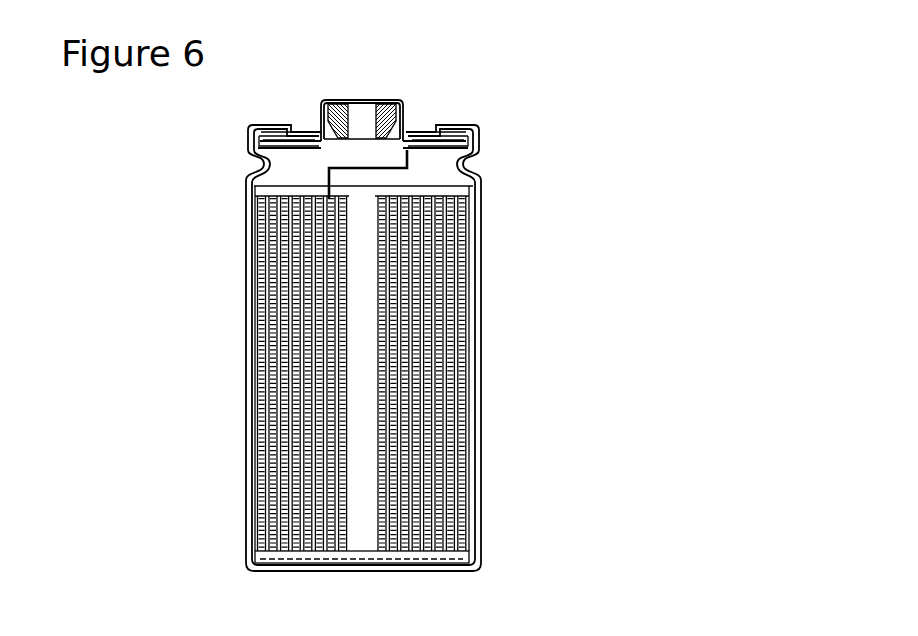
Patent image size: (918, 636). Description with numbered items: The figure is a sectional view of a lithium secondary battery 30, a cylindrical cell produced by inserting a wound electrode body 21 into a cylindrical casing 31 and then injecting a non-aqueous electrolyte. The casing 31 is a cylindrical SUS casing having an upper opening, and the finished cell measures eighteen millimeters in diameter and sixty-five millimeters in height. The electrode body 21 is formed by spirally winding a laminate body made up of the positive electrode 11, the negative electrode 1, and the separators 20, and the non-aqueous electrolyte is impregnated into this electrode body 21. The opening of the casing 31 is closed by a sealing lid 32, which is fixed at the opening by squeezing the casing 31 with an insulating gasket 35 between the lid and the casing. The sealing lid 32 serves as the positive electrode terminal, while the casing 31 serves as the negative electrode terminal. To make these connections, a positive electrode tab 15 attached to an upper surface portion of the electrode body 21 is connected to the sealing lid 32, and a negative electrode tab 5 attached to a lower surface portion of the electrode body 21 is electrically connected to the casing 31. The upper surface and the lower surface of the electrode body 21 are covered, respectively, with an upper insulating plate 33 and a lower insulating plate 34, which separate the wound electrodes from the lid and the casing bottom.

The lithium secondary battery 30 is at (608, 51).
The casing 31 is at (473, 218).
The sealing lid 32 is at (398, 99).
The insulating gasket 35 is at (465, 141).
The upper insulating plate 33 is at (258, 183).
The positive electrode tab 15 is at (320, 190).
The negative electrode 1 is at (462, 316).
The electrode body 21 is at (272, 342).
The separators 20 is at (460, 362).
The positive electrode 11 is at (455, 408).
The lower insulating plate 34 is at (258, 549).
The negative electrode tab 5 is at (336, 565).